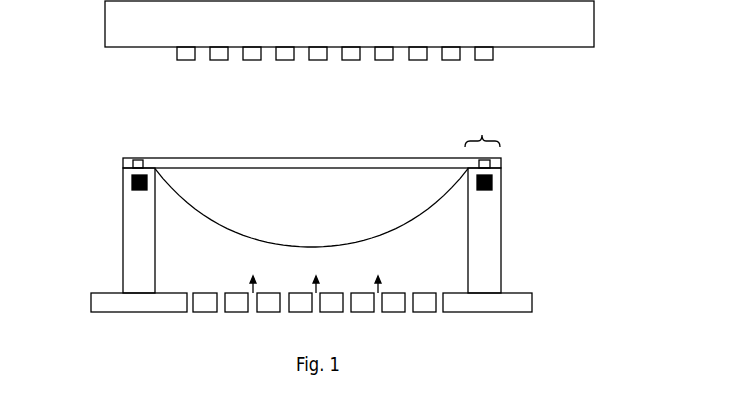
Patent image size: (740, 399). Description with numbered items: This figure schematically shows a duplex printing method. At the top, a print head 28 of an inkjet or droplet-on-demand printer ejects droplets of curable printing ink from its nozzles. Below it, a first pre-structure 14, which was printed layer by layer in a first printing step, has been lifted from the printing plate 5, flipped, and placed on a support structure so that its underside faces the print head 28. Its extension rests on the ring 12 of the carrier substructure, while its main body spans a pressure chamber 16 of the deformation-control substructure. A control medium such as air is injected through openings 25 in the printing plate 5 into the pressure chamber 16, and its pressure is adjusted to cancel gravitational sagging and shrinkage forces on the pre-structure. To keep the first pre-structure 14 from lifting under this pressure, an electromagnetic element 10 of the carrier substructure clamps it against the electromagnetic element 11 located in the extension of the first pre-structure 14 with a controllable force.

The print head 28 is at (568, 35).
The electromagnetic element of the first pre-structure 11 is at (133, 162).
The electromagnetic element of the carrier substructure 10 is at (127, 178).
The ring 12 is at (125, 235).
The pressure chamber 16 is at (445, 255).
The first pre-structure 14 is at (215, 198).
The printing plate 5 is at (113, 300).
The openings in printing plate 25 is at (191, 303).